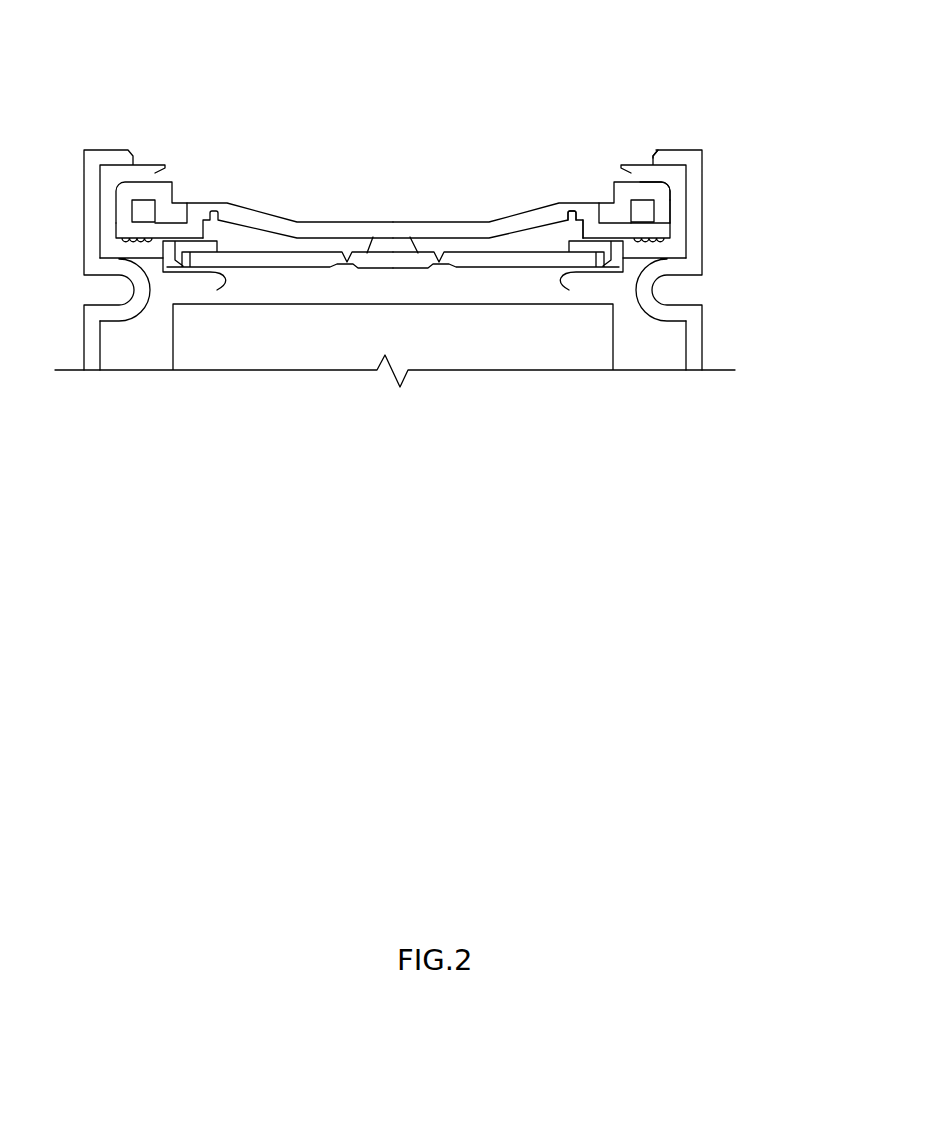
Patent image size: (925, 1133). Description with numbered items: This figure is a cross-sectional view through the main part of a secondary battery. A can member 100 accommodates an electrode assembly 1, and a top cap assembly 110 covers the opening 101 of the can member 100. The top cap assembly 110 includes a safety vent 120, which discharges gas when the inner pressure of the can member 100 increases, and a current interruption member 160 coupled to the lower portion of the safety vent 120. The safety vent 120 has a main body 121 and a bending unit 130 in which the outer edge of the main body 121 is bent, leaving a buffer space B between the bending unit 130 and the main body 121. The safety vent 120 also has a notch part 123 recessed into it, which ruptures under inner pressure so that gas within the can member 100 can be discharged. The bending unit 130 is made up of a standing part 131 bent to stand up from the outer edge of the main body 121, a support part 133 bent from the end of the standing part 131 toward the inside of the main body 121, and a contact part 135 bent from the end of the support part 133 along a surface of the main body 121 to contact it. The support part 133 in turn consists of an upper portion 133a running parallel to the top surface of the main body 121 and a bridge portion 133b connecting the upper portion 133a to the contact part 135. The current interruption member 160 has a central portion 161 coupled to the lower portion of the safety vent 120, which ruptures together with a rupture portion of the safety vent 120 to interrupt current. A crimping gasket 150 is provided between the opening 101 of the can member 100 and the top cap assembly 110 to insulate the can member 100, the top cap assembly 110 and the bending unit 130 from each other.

The electrode assembly 1 is at (221, 351).
The can member 100 is at (428, 232).
The opening 101 is at (653, 160).
The top cap assembly 110 is at (466, 78).
The safety vent 120 is at (391, 220).
The main body 121 is at (611, 234).
The notch part 123 is at (606, 208).
The bending unit 130 is at (453, 199).
The standing part 131 is at (661, 218).
The support part 133 is at (428, 198).
The upper portion 133a is at (641, 188).
The bridge portion 133b is at (657, 213).
The contact part 135 is at (617, 177).
The crimping gasket 150 is at (675, 247).
The current interruption member 160 is at (222, 290).
The central portion 161 is at (363, 247).
The buffer space B is at (142, 215).